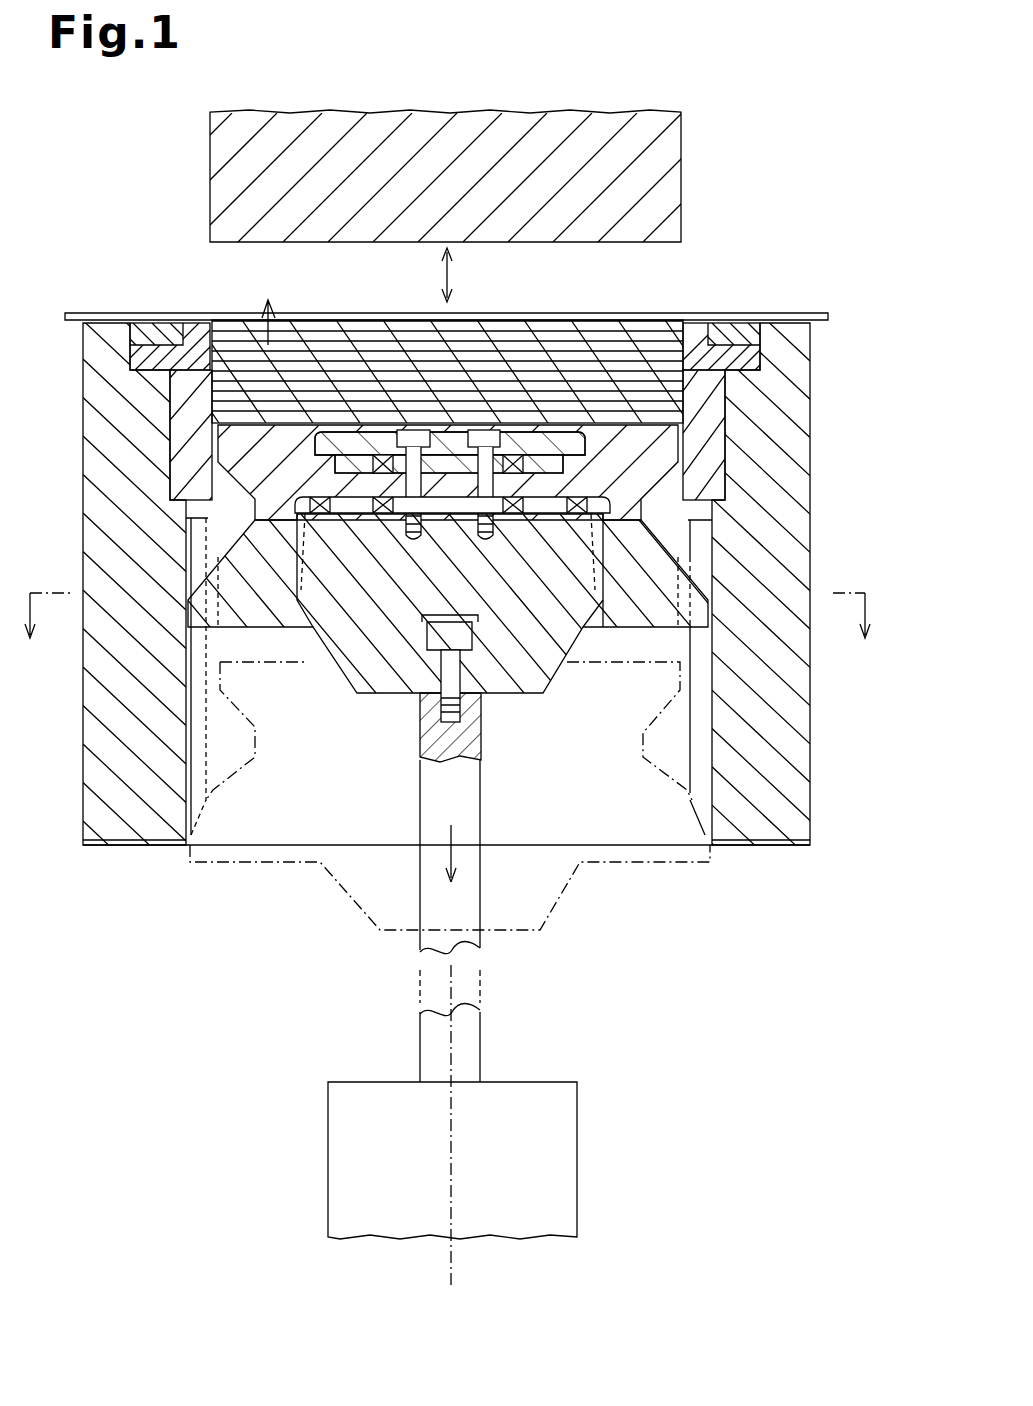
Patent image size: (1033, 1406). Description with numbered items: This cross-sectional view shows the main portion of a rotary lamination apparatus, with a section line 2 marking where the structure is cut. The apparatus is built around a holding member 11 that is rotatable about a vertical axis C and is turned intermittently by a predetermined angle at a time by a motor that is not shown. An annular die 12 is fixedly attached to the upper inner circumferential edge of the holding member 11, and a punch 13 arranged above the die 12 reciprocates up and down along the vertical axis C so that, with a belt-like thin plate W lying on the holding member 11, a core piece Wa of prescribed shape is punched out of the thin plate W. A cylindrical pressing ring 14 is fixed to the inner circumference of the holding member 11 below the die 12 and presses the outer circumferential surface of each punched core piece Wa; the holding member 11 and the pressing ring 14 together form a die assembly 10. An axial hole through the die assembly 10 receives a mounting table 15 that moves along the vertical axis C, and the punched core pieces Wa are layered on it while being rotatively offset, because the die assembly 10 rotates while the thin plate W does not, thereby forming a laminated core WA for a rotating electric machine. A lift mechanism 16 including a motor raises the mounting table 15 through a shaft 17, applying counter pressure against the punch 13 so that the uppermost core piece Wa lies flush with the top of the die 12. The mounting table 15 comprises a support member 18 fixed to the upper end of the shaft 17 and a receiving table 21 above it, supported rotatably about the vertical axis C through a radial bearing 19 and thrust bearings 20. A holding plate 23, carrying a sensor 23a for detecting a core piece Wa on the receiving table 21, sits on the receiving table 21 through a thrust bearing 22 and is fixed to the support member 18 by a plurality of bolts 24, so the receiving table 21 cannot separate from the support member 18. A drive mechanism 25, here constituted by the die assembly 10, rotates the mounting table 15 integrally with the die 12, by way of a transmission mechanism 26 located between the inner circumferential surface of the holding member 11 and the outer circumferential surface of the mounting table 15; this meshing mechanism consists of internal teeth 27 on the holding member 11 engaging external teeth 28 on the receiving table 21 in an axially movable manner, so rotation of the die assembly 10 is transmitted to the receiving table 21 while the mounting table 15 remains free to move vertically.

The die assembly 10 is at (808, 455).
The holding member 11 is at (770, 848).
The annular die 12 is at (697, 330).
The punch 13 is at (683, 148).
The pressing ring 14 is at (708, 410).
The mounting table 15 is at (215, 447).
The lift mechanism 16 is at (330, 1115).
The shaft 17 is at (420, 778).
The support member 18 is at (390, 690).
The radial bearing 19 is at (604, 567).
The thrust bearings 20 is at (525, 515).
The receiving table 21 is at (240, 475).
The thrust bearing 22 is at (525, 468).
The holding plate 23 is at (313, 450).
The sensor 23a is at (595, 431).
The bolts 24 is at (475, 504).
The drive mechanism 25 is at (129, 860).
The transmission mechanism 26 is at (325, 706).
The internal teeth 27 is at (198, 677).
The external teeth 28 is at (213, 628).
The thin plate W is at (118, 312).
The core piece Wa is at (268, 308).
The laminated core WA is at (343, 320).
The vertical axis C is at (465, 1267).
The section line of FIG. 2 is at (446, 632).